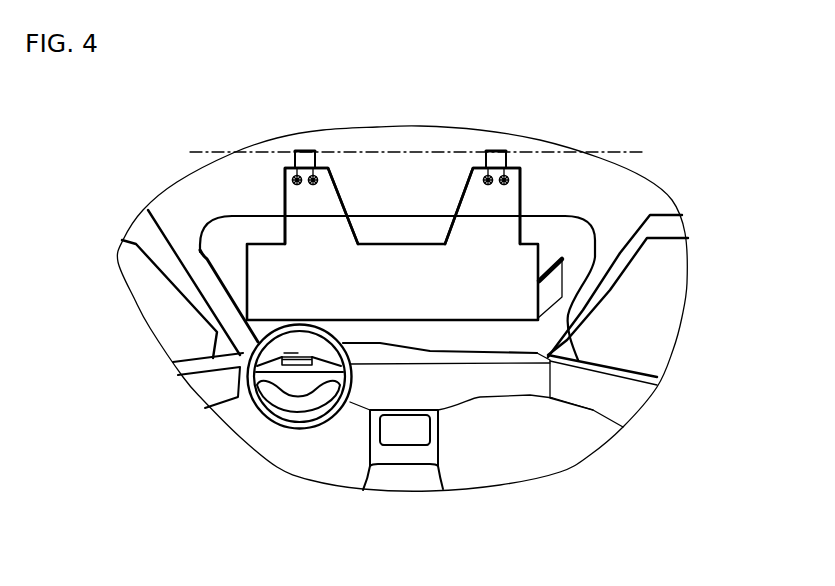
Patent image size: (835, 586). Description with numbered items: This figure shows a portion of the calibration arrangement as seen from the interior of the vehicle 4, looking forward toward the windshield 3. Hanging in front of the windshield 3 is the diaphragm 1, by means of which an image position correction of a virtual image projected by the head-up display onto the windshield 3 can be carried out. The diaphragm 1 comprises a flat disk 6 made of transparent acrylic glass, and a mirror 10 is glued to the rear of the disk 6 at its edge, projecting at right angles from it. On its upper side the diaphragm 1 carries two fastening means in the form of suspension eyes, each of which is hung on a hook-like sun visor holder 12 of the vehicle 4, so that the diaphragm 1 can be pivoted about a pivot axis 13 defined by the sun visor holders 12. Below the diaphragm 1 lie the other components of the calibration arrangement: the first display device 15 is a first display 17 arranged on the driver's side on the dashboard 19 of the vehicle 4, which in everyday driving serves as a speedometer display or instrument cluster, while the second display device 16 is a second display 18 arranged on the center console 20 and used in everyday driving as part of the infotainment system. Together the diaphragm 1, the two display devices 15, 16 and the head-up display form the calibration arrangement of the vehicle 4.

The diaphragm 1 is at (543, 252).
The windshield 3 is at (215, 217).
The vehicle 4 is at (718, 188).
The disk 6 is at (533, 238).
The mirror 10 is at (562, 278).
The sun visor holder 12 is at (308, 151).
The pivot axis 13 is at (232, 152).
The first display device 15 is at (297, 352).
The second display device 16 is at (393, 451).
The first display 17 is at (312, 357).
The second display 18 is at (402, 447).
The dashboard 19 is at (351, 403).
The center console 20 is at (438, 455).